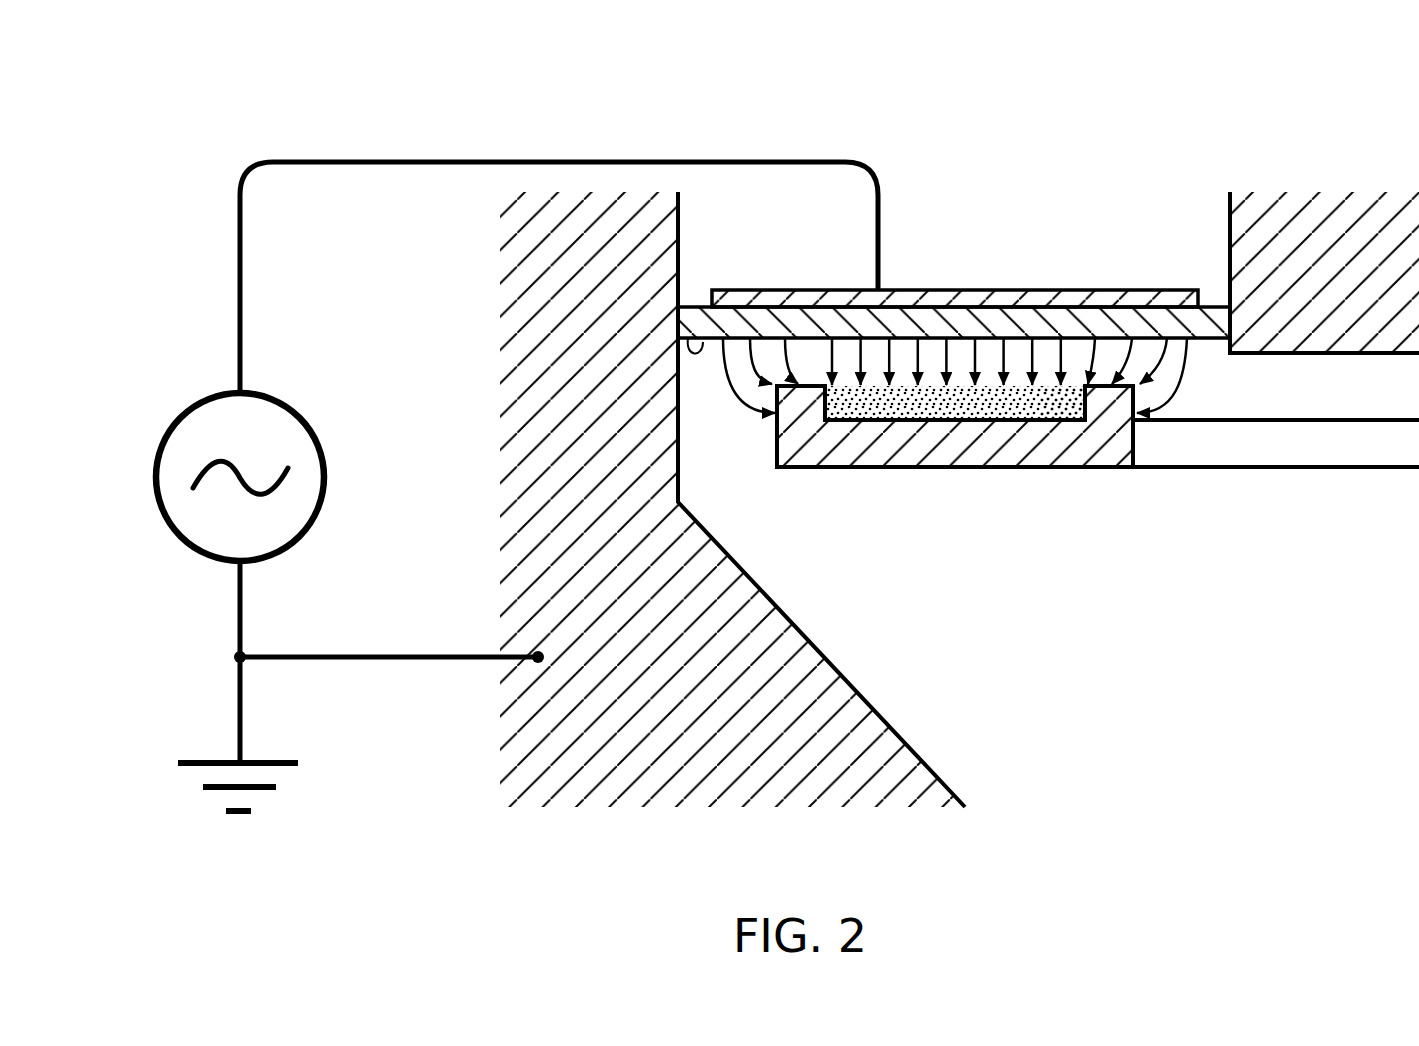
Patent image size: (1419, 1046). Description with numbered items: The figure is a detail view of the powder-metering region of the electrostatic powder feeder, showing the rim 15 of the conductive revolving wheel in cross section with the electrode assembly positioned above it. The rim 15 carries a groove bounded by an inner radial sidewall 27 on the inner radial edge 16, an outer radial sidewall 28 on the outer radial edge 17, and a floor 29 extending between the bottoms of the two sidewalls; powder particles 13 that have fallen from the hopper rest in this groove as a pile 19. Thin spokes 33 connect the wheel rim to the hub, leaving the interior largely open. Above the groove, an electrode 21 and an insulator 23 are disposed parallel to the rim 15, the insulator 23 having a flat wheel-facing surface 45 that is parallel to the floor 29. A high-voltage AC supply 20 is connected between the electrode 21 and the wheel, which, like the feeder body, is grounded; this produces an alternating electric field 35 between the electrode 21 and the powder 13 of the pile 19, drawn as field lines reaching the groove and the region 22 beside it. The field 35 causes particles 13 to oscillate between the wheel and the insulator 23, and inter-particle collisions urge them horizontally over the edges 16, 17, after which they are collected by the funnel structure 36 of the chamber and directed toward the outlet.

The powder particles 13 is at (1057, 413).
The rim 15 is at (1017, 443).
The inner radial edge 16 is at (1133, 432).
The outer radial edge 17 is at (778, 433).
The pile 19 is at (960, 405).
The AC supply 20 is at (202, 545).
The electrode 21 is at (932, 297).
The gap region 22 is at (1140, 358).
The insulator 23 is at (1047, 318).
The inner radial sidewall 27 is at (1093, 418).
The outer radial sidewall 28 is at (833, 418).
The floor 29 is at (913, 420).
The spokes 33 is at (1332, 448).
The alternating electric field 35 is at (1092, 352).
The funnel structure 36 is at (942, 778).
The wheel-facing surface 45 is at (688, 340).